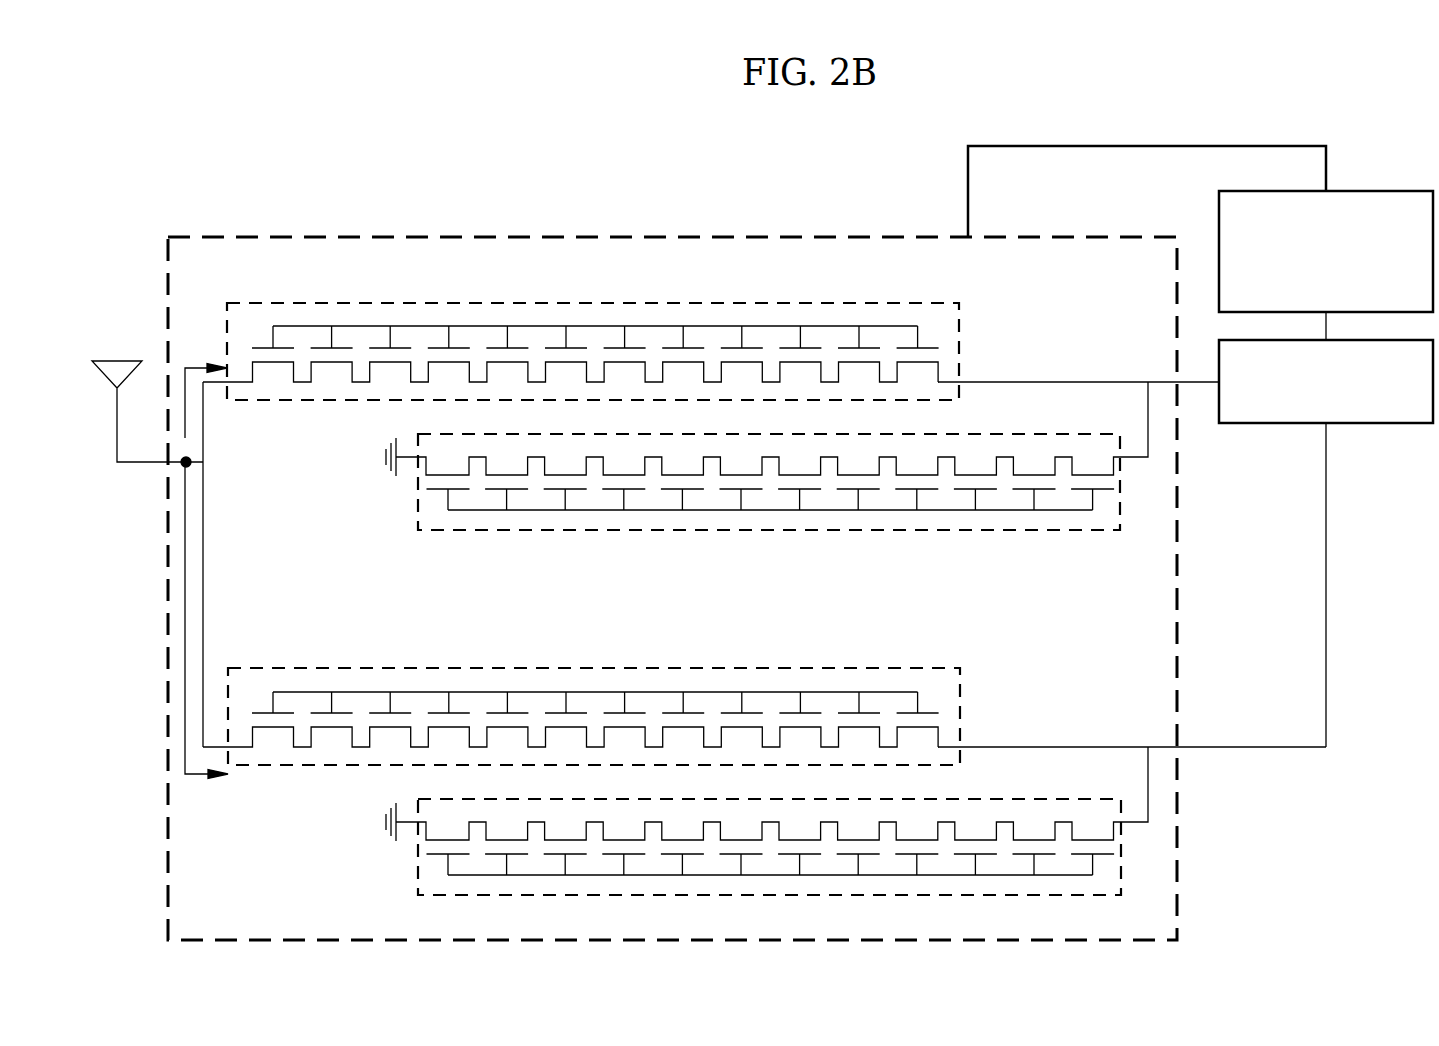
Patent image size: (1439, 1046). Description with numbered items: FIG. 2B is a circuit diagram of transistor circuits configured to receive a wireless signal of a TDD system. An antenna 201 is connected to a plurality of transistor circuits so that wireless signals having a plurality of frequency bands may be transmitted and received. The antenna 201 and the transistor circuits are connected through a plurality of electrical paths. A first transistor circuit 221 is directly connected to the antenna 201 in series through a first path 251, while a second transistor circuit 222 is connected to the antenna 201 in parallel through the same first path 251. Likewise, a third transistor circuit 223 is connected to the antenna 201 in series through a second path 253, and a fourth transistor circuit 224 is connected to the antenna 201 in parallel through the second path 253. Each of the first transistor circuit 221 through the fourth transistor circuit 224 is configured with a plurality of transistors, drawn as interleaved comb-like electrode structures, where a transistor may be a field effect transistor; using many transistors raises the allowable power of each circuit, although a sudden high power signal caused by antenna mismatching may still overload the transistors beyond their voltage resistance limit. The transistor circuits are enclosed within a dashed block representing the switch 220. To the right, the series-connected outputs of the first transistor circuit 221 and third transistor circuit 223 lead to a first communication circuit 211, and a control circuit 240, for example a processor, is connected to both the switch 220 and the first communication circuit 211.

The antenna 201 is at (115, 359).
The first communication circuit 211 is at (1372, 423).
The switch 220 is at (1080, 237).
The first transistor circuit 221 is at (963, 347).
The second transistor circuit 222 is at (384, 457).
The third transistor circuit 223 is at (963, 712).
The fourth transistor circuit 224 is at (384, 822).
The control circuit 240 is at (1382, 191).
The first path 251 is at (203, 366).
The second path 253 is at (185, 730).